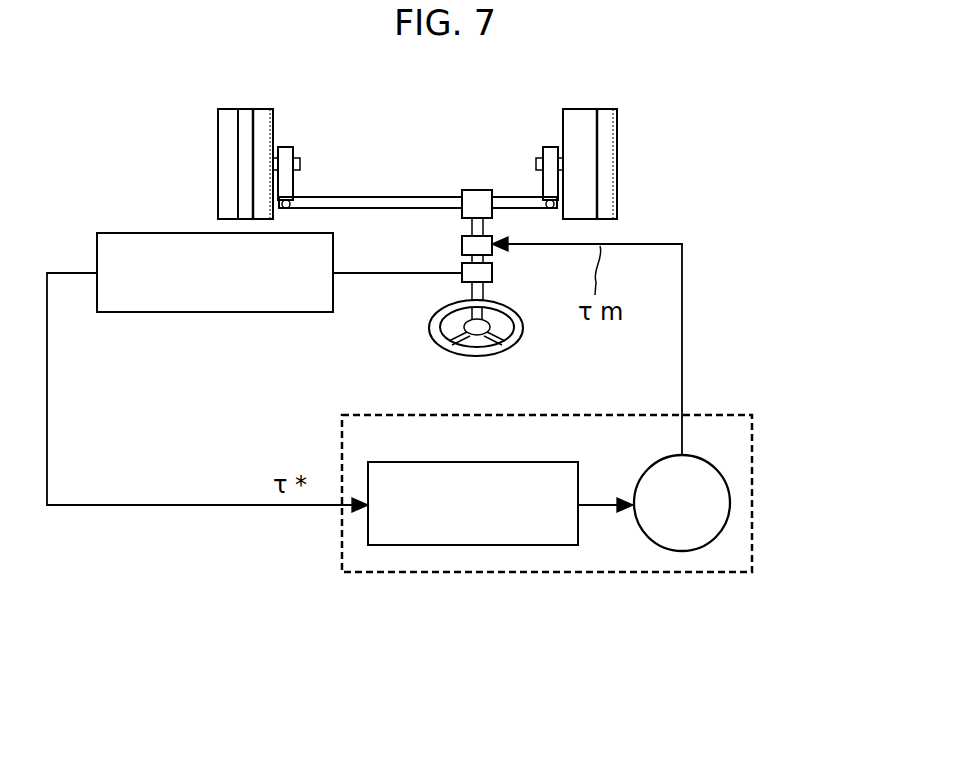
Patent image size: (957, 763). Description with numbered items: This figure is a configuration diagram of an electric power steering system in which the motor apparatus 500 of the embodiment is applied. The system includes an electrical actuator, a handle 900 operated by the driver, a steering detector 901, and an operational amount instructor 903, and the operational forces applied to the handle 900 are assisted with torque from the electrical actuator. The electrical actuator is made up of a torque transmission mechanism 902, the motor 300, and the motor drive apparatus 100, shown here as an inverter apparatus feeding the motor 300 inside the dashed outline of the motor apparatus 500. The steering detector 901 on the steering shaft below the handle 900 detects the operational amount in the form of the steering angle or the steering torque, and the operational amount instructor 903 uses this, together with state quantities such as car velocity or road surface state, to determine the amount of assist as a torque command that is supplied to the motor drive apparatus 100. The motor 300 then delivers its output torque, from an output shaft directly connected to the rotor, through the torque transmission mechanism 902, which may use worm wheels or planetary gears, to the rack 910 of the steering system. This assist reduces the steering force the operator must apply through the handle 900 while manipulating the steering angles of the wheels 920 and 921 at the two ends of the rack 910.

The motor drive apparatus 100 is at (408, 447).
The motor 300 is at (730, 503).
The motor apparatus 500 is at (540, 572).
The handle 900 is at (521, 338).
The steering detector 901 is at (460, 284).
The torque transmission mechanism 902 is at (462, 243).
The operational amount instructor 903 is at (277, 312).
The rack 910 is at (385, 197).
The wheel 920 is at (218, 163).
The wheel 921 is at (617, 165).